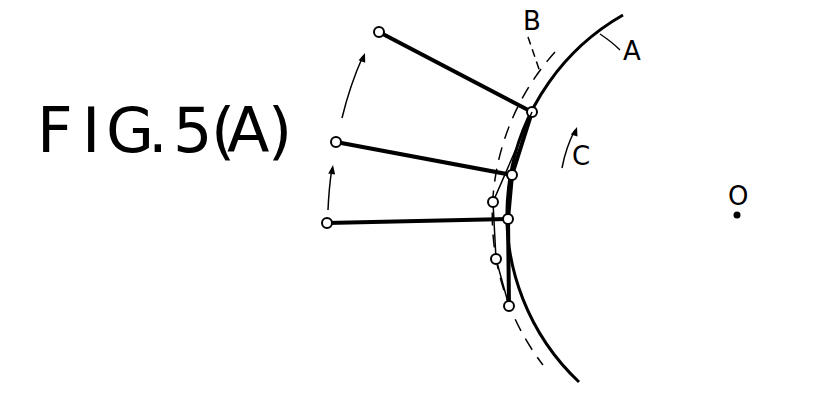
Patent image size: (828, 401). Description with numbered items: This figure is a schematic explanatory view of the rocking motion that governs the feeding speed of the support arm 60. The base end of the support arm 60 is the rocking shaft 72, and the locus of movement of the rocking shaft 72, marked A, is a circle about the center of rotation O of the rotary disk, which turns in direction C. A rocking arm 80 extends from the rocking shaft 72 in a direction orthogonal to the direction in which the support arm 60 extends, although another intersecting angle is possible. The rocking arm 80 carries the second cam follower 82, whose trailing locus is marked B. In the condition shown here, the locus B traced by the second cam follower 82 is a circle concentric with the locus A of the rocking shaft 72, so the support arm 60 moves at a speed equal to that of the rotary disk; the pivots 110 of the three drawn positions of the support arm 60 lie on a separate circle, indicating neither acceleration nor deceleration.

The support arm 60 is at (483, 85).
The pivot point 110 is at (388, 32).
The rocking shaft 72 is at (538, 112).
The rocking arm 80 is at (512, 279).
The second cam follower 82 is at (488, 201).